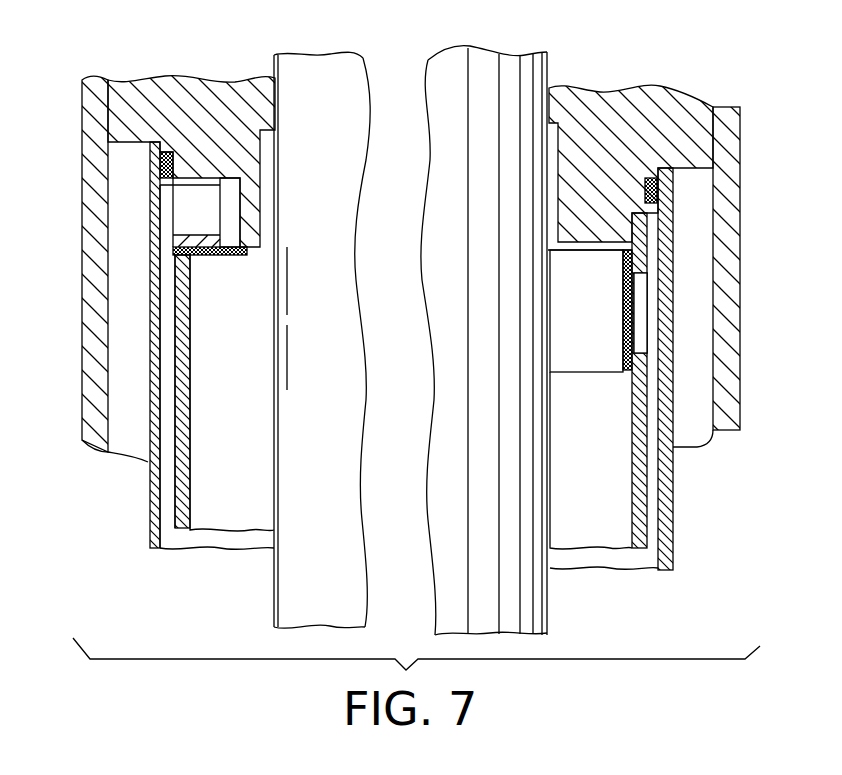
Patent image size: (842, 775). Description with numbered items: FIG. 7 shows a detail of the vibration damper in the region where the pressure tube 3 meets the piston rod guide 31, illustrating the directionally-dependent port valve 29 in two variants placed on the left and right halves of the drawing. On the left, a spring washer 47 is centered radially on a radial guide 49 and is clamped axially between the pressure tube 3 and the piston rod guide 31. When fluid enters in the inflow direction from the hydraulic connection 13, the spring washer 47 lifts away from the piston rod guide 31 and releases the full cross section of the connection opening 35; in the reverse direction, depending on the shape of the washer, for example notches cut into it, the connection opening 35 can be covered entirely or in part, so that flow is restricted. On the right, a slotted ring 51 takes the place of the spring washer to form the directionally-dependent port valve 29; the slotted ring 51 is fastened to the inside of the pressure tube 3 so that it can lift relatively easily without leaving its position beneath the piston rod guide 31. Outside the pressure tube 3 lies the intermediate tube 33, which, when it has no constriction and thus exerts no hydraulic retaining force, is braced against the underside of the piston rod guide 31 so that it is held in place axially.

The piston rod guide 31 is at (167, 103).
The connection opening 35 is at (230, 213).
The radial guide 49 is at (160, 282).
The spring washer 47 is at (244, 262).
The pressure tube 3 is at (178, 517).
The hydraulic connection 13 is at (165, 484).
The directionally-dependent port valve 29 is at (206, 380).
The intermediate tube 33 is at (663, 502).
The slotted ring 51 is at (633, 302).